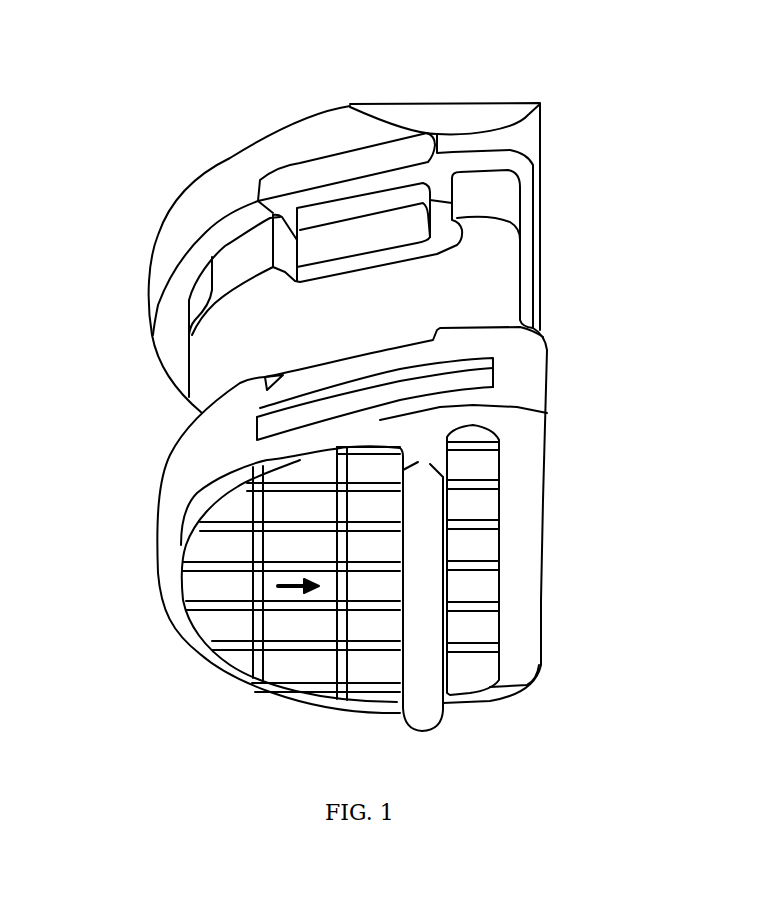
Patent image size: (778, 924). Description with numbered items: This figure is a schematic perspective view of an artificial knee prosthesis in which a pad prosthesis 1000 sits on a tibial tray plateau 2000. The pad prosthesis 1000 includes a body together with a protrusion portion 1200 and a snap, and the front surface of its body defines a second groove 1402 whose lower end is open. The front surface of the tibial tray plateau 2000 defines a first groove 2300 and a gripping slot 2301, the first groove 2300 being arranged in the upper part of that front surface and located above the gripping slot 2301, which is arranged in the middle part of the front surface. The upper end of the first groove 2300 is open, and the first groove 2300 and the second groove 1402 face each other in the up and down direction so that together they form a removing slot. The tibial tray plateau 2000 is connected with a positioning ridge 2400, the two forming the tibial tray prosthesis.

The pad prosthesis 1000 is at (300, 138).
The protrusion portion 1200 is at (470, 277).
The second groove 1402 is at (303, 193).
The tibial tray plateau 2000 is at (520, 467).
The first groove 2300 is at (263, 376).
The gripping slot 2301 is at (256, 429).
The positioning ridge 2400 is at (412, 670).